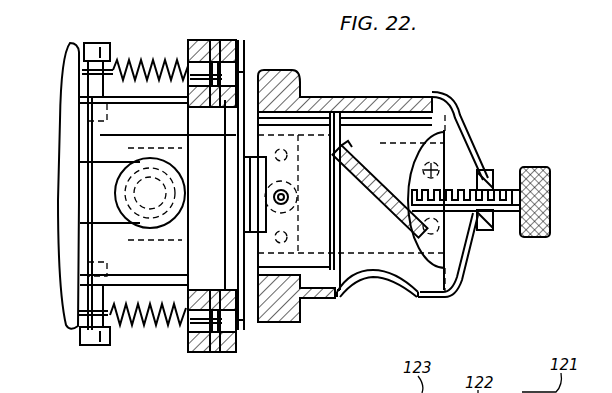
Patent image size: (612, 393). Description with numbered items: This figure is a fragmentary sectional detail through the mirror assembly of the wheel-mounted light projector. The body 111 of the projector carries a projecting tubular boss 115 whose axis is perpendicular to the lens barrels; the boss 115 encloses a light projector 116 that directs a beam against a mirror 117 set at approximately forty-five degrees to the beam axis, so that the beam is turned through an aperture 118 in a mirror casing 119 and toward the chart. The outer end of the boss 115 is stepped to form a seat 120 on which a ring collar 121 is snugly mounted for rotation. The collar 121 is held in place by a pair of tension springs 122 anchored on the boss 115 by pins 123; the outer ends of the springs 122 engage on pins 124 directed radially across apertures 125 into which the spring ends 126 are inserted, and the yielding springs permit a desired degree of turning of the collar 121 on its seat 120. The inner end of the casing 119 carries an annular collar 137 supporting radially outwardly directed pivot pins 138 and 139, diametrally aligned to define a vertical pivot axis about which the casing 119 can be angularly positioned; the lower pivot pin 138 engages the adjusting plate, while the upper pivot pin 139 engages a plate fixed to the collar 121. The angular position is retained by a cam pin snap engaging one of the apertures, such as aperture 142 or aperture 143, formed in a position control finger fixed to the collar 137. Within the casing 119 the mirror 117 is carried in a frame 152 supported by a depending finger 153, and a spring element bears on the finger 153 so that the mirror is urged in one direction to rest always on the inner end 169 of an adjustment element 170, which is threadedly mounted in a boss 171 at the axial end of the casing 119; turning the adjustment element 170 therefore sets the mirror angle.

The body 111 is at (63, 208).
The projecting tubular boss 115 is at (82, 133).
The light projector 116 is at (243, 172).
The mirror 117 is at (370, 195).
The aperture 118 is at (398, 285).
The mirror casing 119 is at (415, 97).
The seat 120 is at (200, 120).
The ring collar 121 is at (233, 355).
The tension springs 122 is at (126, 60).
The pins 123 is at (92, 42).
The pins 124 is at (216, 40).
The apertures 125 is at (243, 62).
The spring ends 126 is at (240, 72).
The annular collar 137 is at (290, 90).
The lower pivot pin 138 is at (288, 200).
The upper pivot pin 139 is at (360, 272).
The aperture 142 is at (447, 256).
The aperture 143 is at (437, 167).
The frame 152 is at (460, 275).
The depending finger 153 is at (402, 174).
The inner end 169 is at (432, 143).
The adjustment element 170 is at (551, 186).
The boss 171 is at (492, 178).